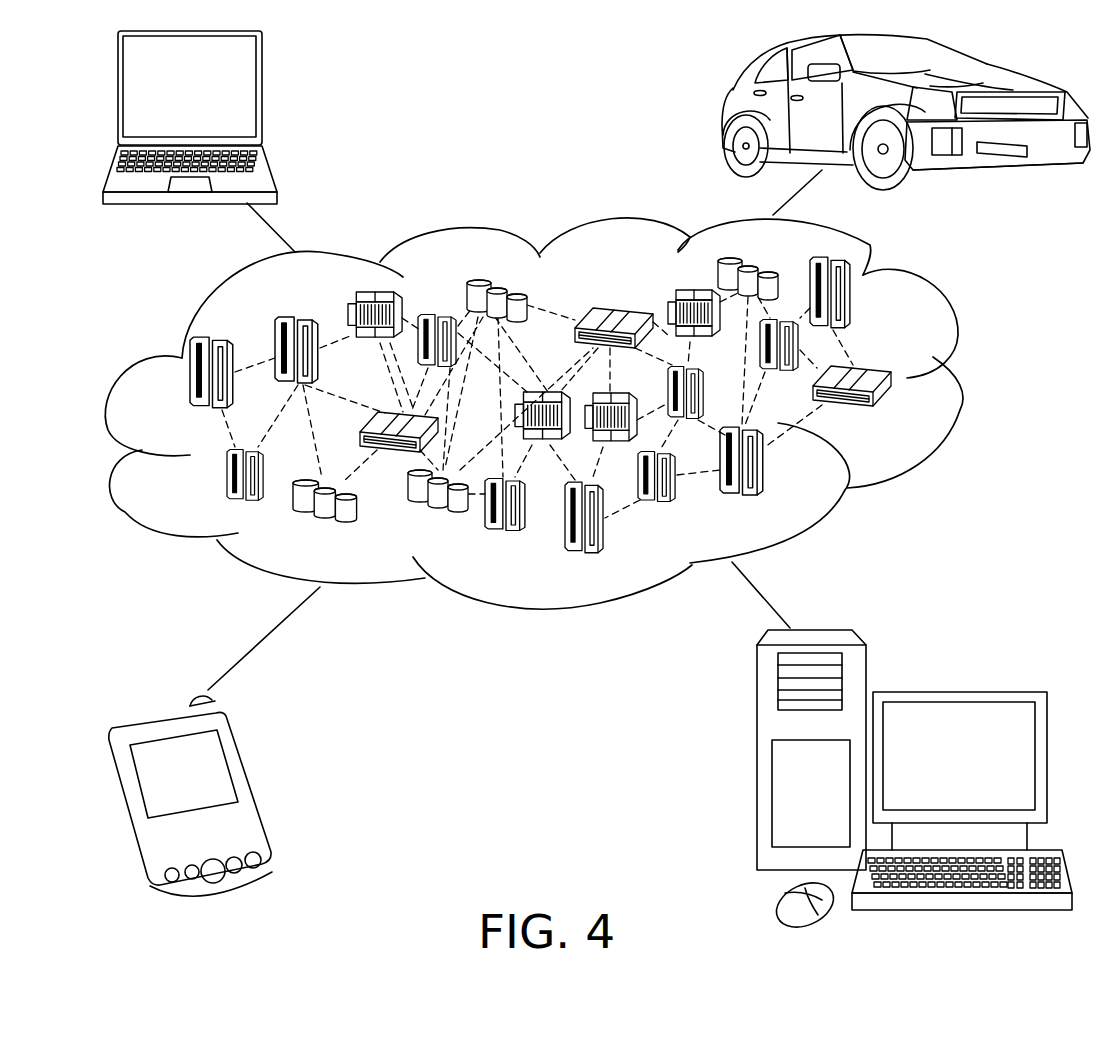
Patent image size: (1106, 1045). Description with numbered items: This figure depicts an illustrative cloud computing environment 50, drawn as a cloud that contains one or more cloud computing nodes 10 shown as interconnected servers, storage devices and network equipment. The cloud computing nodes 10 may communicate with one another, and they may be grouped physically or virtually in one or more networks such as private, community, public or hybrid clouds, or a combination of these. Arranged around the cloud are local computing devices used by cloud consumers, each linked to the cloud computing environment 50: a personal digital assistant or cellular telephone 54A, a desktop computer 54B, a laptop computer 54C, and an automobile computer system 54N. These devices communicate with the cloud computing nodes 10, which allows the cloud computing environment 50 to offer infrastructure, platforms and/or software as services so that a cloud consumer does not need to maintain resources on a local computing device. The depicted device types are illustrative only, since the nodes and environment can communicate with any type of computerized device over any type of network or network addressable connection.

The cloud computing nodes 10 is at (897, 418).
The cloud computing environment 50 is at (960, 380).
The personal digital assistant (PDA) or cellular telephone 54A is at (250, 788).
The desktop computer 54B is at (957, 690).
The laptop computer 54C is at (263, 95).
The automobile computer system 54N is at (727, 111).